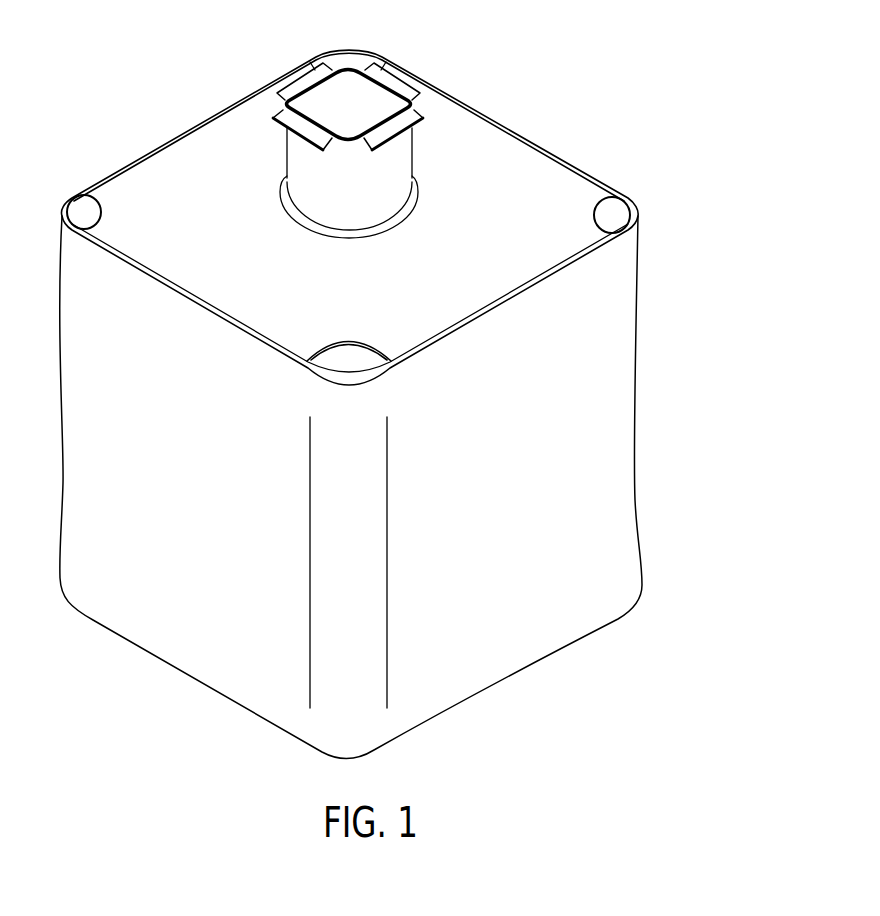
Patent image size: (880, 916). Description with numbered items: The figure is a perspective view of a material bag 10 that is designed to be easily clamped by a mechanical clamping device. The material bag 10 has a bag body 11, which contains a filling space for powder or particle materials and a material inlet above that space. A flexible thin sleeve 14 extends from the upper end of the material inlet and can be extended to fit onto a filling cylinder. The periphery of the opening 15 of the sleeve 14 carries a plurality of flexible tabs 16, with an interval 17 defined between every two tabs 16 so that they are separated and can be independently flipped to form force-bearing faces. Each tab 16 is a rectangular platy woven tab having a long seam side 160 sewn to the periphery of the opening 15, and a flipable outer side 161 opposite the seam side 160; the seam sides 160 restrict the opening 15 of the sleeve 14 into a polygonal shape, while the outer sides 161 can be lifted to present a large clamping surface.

The material bag 10 is at (410, 404).
The bag body 11 is at (597, 393).
The sleeve 14 is at (390, 168).
The opening 15 is at (366, 103).
The tab 16 is at (231, 114).
The interval 17 is at (327, 98).
The seam side 160 is at (282, 110).
The flipable outer side 161 is at (181, 141).